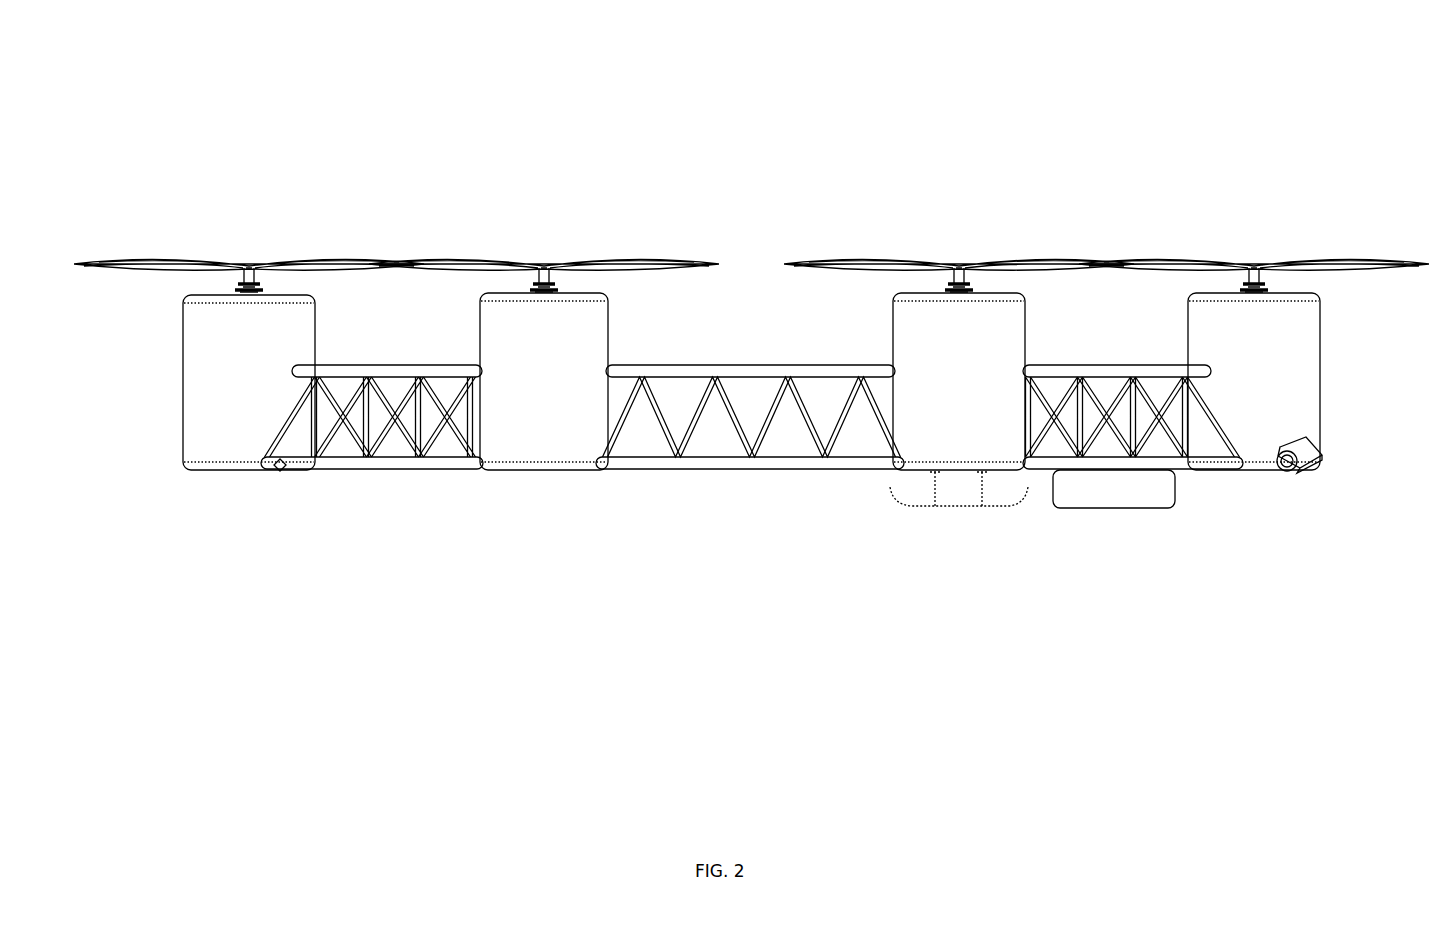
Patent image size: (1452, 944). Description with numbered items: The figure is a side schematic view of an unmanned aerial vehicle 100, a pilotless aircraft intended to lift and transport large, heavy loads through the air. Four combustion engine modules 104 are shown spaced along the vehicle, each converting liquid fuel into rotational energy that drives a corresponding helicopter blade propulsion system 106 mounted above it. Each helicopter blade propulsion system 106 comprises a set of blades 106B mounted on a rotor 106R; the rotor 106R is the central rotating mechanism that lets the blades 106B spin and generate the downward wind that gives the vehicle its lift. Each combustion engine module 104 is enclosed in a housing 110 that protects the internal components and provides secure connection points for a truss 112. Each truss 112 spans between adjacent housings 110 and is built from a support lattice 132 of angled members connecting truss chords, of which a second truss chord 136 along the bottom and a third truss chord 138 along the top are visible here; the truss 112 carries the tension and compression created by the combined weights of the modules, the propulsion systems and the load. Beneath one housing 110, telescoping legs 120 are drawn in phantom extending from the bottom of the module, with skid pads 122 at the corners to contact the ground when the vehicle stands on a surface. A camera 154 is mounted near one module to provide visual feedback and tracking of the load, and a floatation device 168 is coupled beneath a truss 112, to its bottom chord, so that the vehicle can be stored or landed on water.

The unmanned aerial vehicle 100 is at (252, 97).
The combustion engine module 104 is at (237, 243).
The helicopter blade propulsion system 106 is at (751, 260).
The blades 106B is at (137, 262).
The rotor 106R is at (240, 276).
The housing 110 is at (751, 381).
The truss 112 is at (1097, 352).
The telescoping legs 120 is at (980, 483).
The skid pads 122 is at (975, 511).
The support lattice 132 is at (448, 446).
The second truss chord 136 is at (398, 464).
The third truss chord 138 is at (426, 374).
The camera 154 is at (1292, 470).
The floatation device 168 is at (1111, 486).